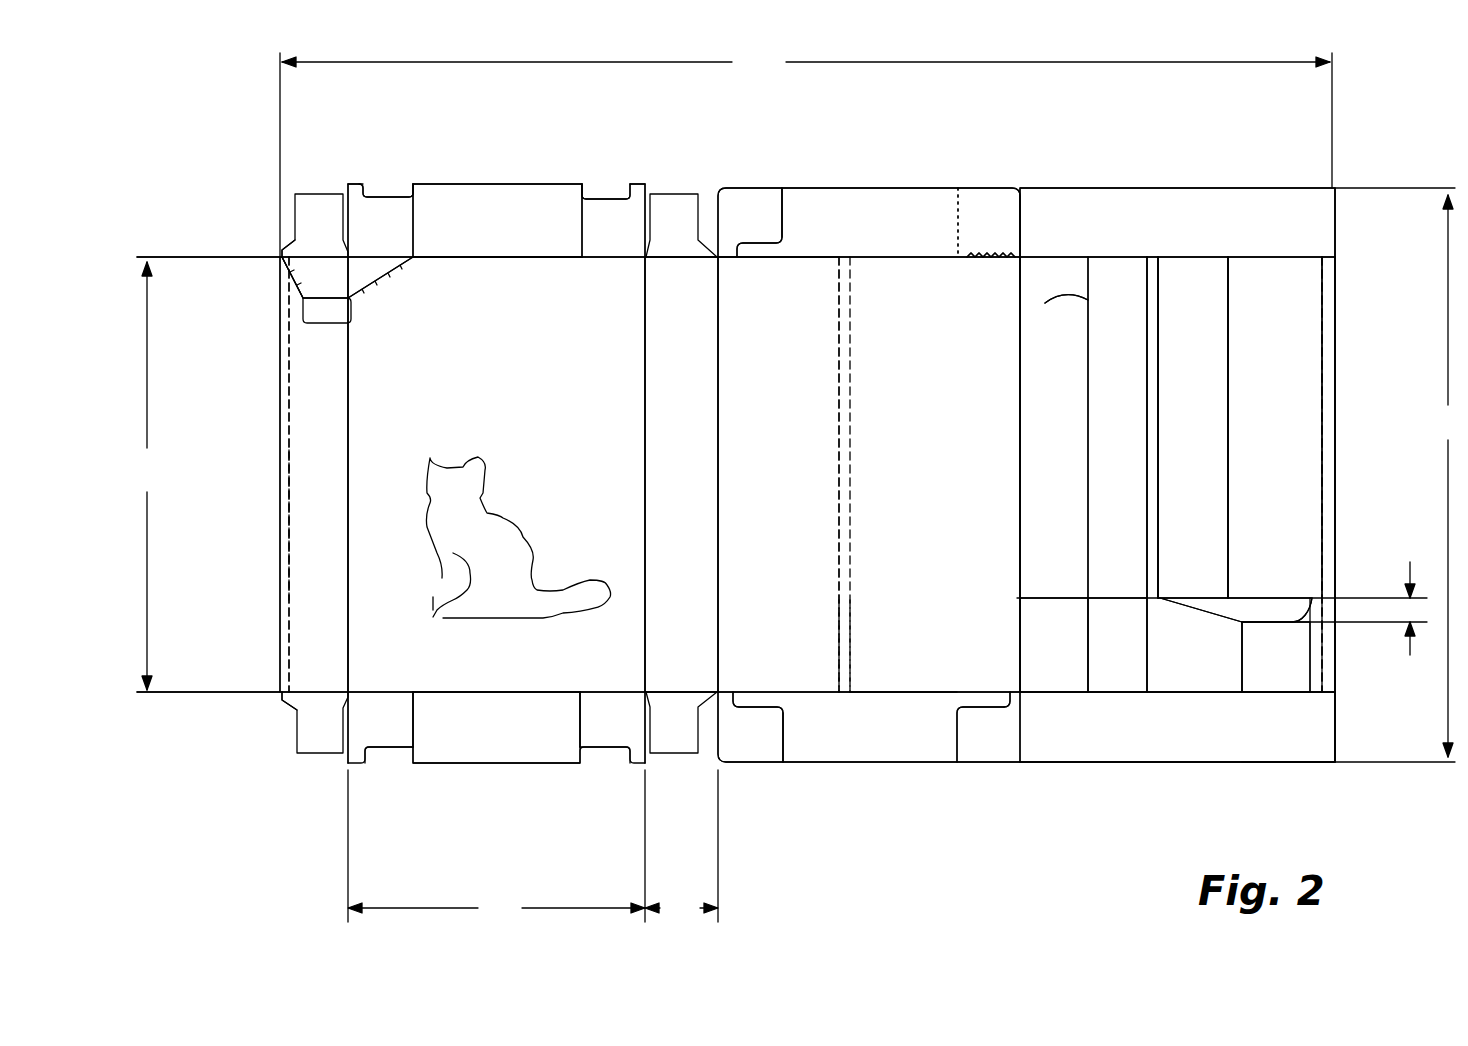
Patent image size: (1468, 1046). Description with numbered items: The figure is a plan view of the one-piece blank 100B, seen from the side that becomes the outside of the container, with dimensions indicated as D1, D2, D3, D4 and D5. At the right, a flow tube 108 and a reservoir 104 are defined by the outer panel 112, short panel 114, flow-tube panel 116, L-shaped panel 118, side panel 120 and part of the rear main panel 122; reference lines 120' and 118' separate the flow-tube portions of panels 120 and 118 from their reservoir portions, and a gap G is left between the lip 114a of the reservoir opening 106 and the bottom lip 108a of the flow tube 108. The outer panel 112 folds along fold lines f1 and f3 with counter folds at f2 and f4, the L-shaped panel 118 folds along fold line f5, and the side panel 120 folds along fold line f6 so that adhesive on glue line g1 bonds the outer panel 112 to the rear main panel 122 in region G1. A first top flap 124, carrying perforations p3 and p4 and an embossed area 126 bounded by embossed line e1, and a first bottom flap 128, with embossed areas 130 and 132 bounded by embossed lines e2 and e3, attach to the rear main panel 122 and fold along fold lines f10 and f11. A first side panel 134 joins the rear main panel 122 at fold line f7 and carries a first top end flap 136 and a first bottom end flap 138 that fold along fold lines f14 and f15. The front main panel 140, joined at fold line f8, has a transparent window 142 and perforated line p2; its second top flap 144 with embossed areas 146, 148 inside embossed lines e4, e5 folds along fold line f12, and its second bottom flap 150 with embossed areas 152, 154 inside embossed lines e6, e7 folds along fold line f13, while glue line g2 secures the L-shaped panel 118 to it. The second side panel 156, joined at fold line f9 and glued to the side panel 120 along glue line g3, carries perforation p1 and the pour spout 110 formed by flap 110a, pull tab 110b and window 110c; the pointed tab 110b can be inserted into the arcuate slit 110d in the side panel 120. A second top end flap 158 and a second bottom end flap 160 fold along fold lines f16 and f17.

The pour spout 110 is at (222, 155).
The one-piece blank 100B is at (1364, 168).
The second top end flap 158 is at (325, 210).
The second bottom end flap 160 is at (320, 733).
The fold line f16 is at (282, 253).
The fold line f17 is at (297, 725).
The perforation line p1 is at (297, 288).
The perforated line p2 is at (396, 268).
The pour spout flap 110a is at (350, 298).
The pull tab 110b is at (350, 297).
The window 110c is at (335, 277).
The second side panel 156 is at (320, 397).
The glue line g3 is at (277, 522).
The front main panel 140 is at (390, 437).
The fold line f9 is at (348, 557).
The transparent window 142 is at (433, 610).
The embossed area 146 is at (402, 225).
The embossed line e4 is at (400, 200).
The second top flap 144 is at (537, 207).
The embossed line e5 is at (610, 187).
The embossed area 148 is at (601, 228).
The fold line f12 is at (545, 260).
The fold line f8 is at (643, 442).
The embossed area 152 is at (370, 722).
The embossed line e6 is at (415, 722).
The fold line f13 is at (460, 692).
The second bottom flap 150 is at (508, 730).
The embossed line e7 is at (603, 728).
The embossed area 154 is at (602, 727).
The first top end flap 136 is at (700, 207).
The first bottom end flap 138 is at (677, 727).
The fold line f14 is at (680, 258).
The fold line f15 is at (680, 692).
The fold line f7 is at (722, 452).
The first side panel 134 is at (680, 520).
The embossed area 126 is at (765, 203).
The embossed line e1 is at (782, 223).
The first top flap 124 is at (927, 213).
The perforated or weakened line p4 is at (960, 217).
The perforation line p3 is at (991, 258).
The fold line f10 is at (813, 258).
The rear main panel 122 is at (797, 613).
The adhesion region G1 is at (847, 657).
The embossed area 130 is at (737, 737).
The embossed line e2 is at (777, 730).
The first bottom flap 128 is at (925, 737).
The fold line f11 is at (937, 733).
The embossed line e3 is at (1003, 730).
The embossed area 132 is at (1023, 762).
The fold line f6 is at (1020, 433).
The arcuate slit 110d is at (1063, 293).
The fold line f5 is at (1088, 508).
The second glue line g2 is at (1143, 290).
The fold line f4 is at (1160, 320).
The fold line f3 is at (1228, 312).
The glue line g1 is at (1322, 312).
The outer panel 112 is at (1277, 372).
The flow-tube panel 116 is at (1197, 430).
The L-shaped panel 118 is at (1284, 474).
The reservoir opening 106 is at (1255, 605).
The bottom lip of flow tube 108a is at (1217, 607).
The lip of reservoir opening 114a is at (1312, 598).
The reference line 120' is at (1015, 580).
The reference line 118' is at (1044, 624).
The fold line f1 is at (1335, 660).
The side panel 120 is at (1057, 671).
The flow tube 108 is at (1188, 707).
The fold line f2 is at (1242, 657).
The short panel 114 is at (1275, 670).
The reservoir 104 is at (1353, 688).
The dimension D1 is at (143, 476).
The dimension D2 is at (496, 846).
The dimension D3 is at (681, 846).
The dimension D4 is at (807, 119).
The dimension D5 is at (1445, 476).
The gap G is at (1408, 608).